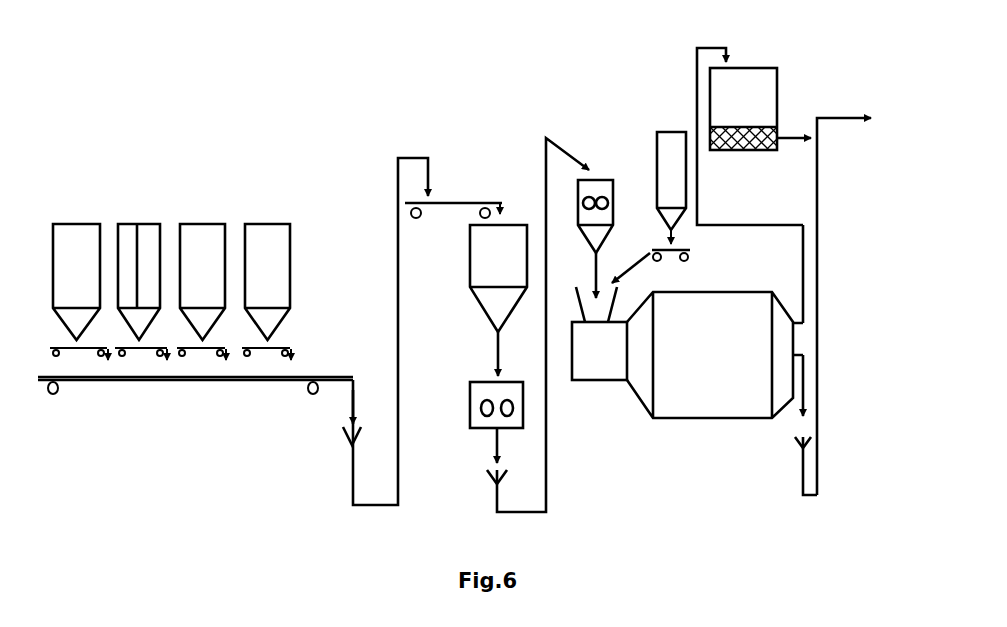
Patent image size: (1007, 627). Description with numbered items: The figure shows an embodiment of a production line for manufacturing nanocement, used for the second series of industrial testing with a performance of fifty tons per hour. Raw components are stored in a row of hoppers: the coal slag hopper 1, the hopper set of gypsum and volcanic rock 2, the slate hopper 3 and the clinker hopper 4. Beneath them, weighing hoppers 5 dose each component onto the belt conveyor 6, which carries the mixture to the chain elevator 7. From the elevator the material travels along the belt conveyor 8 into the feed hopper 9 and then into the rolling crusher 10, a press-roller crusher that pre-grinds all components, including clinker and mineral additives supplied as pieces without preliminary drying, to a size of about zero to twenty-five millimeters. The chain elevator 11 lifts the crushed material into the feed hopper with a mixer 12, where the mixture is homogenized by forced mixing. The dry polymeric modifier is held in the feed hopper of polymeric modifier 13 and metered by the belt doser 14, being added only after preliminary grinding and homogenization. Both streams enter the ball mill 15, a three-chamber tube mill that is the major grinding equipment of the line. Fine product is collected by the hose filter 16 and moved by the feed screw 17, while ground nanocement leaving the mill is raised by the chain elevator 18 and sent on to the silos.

The coal slag hopper 1 is at (100, 224).
The hopper set of gypsum and volcanic rock 2 is at (158, 224).
The slate hopper 3 is at (225, 224).
The clinker hopper 4 is at (288, 224).
The weighing hoppers 5 is at (152, 346).
The belt conveyor 6 is at (341, 377).
The chain elevator 7 is at (362, 427).
The belt conveyor 8 is at (457, 203).
The feed hopper 9 is at (507, 225).
The rolling crusher 10 is at (504, 381).
The chain elevator 11 is at (504, 477).
The feed hopper with a mixer 12 is at (604, 180).
The feed hopper of polymeric modifier 13 is at (670, 131).
The belt doser 14 is at (658, 249).
The ball mill 15 is at (597, 382).
The hose filter 16 is at (762, 67).
The feed screw 17 is at (776, 128).
The chain elevator 18 is at (805, 437).